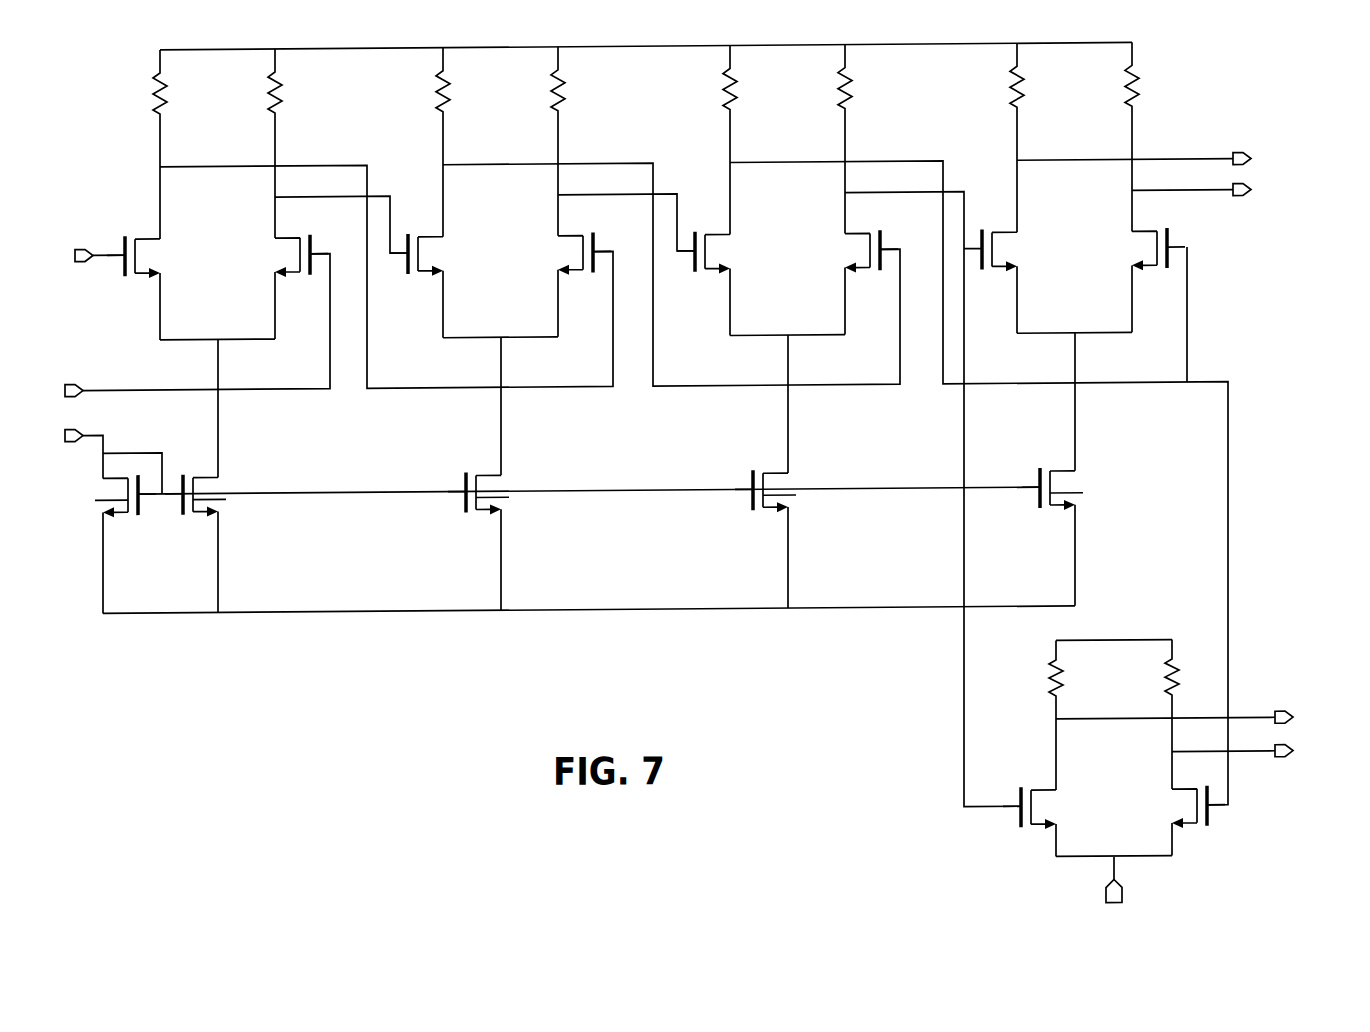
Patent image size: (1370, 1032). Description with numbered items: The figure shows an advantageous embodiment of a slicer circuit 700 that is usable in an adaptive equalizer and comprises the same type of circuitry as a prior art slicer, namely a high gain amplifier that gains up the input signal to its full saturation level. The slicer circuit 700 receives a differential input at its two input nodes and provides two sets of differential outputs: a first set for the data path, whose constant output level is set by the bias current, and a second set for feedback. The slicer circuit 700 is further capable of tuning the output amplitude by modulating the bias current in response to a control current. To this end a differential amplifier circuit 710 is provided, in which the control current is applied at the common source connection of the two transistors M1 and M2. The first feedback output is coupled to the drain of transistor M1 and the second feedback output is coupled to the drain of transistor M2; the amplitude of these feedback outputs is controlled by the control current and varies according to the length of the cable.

The slicer circuit 700 is at (278, 670).
The differential amplifier circuit 710 is at (1120, 771).
The transistor M1 is at (1046, 808).
The transistor M2 is at (1181, 807).